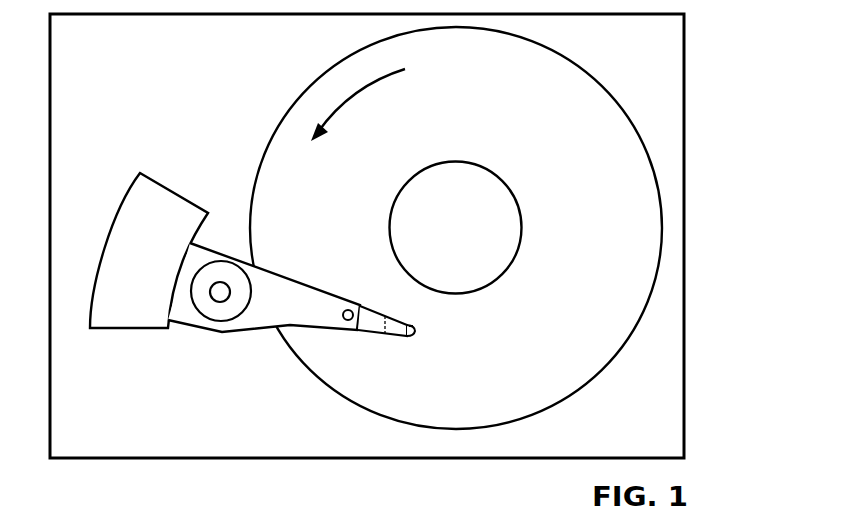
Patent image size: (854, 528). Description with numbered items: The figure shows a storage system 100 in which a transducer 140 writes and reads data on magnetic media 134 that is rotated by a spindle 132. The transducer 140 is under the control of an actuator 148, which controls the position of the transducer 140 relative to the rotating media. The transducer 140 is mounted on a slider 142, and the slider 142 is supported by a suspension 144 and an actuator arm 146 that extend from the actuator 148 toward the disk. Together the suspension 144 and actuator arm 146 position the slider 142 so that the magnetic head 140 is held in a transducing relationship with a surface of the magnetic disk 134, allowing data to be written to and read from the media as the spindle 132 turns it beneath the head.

The storage system 100 is at (699, 49).
The spindle 132 is at (493, 172).
The magnetic media 134 is at (601, 248).
The transducer 140 is at (414, 332).
The slider 142 is at (410, 324).
The suspension 144 is at (372, 333).
The actuator arm 146 is at (278, 273).
The actuator 148 is at (218, 292).